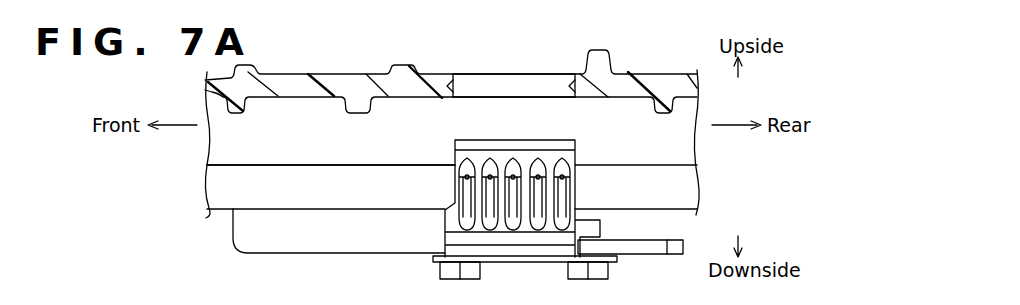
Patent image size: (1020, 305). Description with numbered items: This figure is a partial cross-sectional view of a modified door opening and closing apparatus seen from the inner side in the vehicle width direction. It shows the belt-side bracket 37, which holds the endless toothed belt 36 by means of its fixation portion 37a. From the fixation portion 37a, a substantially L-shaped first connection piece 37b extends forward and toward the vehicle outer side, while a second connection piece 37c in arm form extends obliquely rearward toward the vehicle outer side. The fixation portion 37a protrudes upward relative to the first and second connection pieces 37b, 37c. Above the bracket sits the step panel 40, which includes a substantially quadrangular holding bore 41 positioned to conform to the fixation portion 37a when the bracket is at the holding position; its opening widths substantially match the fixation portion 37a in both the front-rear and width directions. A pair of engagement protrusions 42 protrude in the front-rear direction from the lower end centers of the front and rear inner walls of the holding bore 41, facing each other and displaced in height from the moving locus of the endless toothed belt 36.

The endless toothed belt 36 is at (219, 198).
The belt-side bracket 37 is at (408, 256).
The fixation portion 37a is at (548, 263).
The first connection piece 37b is at (284, 256).
The second connection piece 37c is at (637, 257).
The step panel 40 is at (673, 70).
The holding bore 41 is at (470, 77).
The engagement protrusions 42 is at (566, 80).